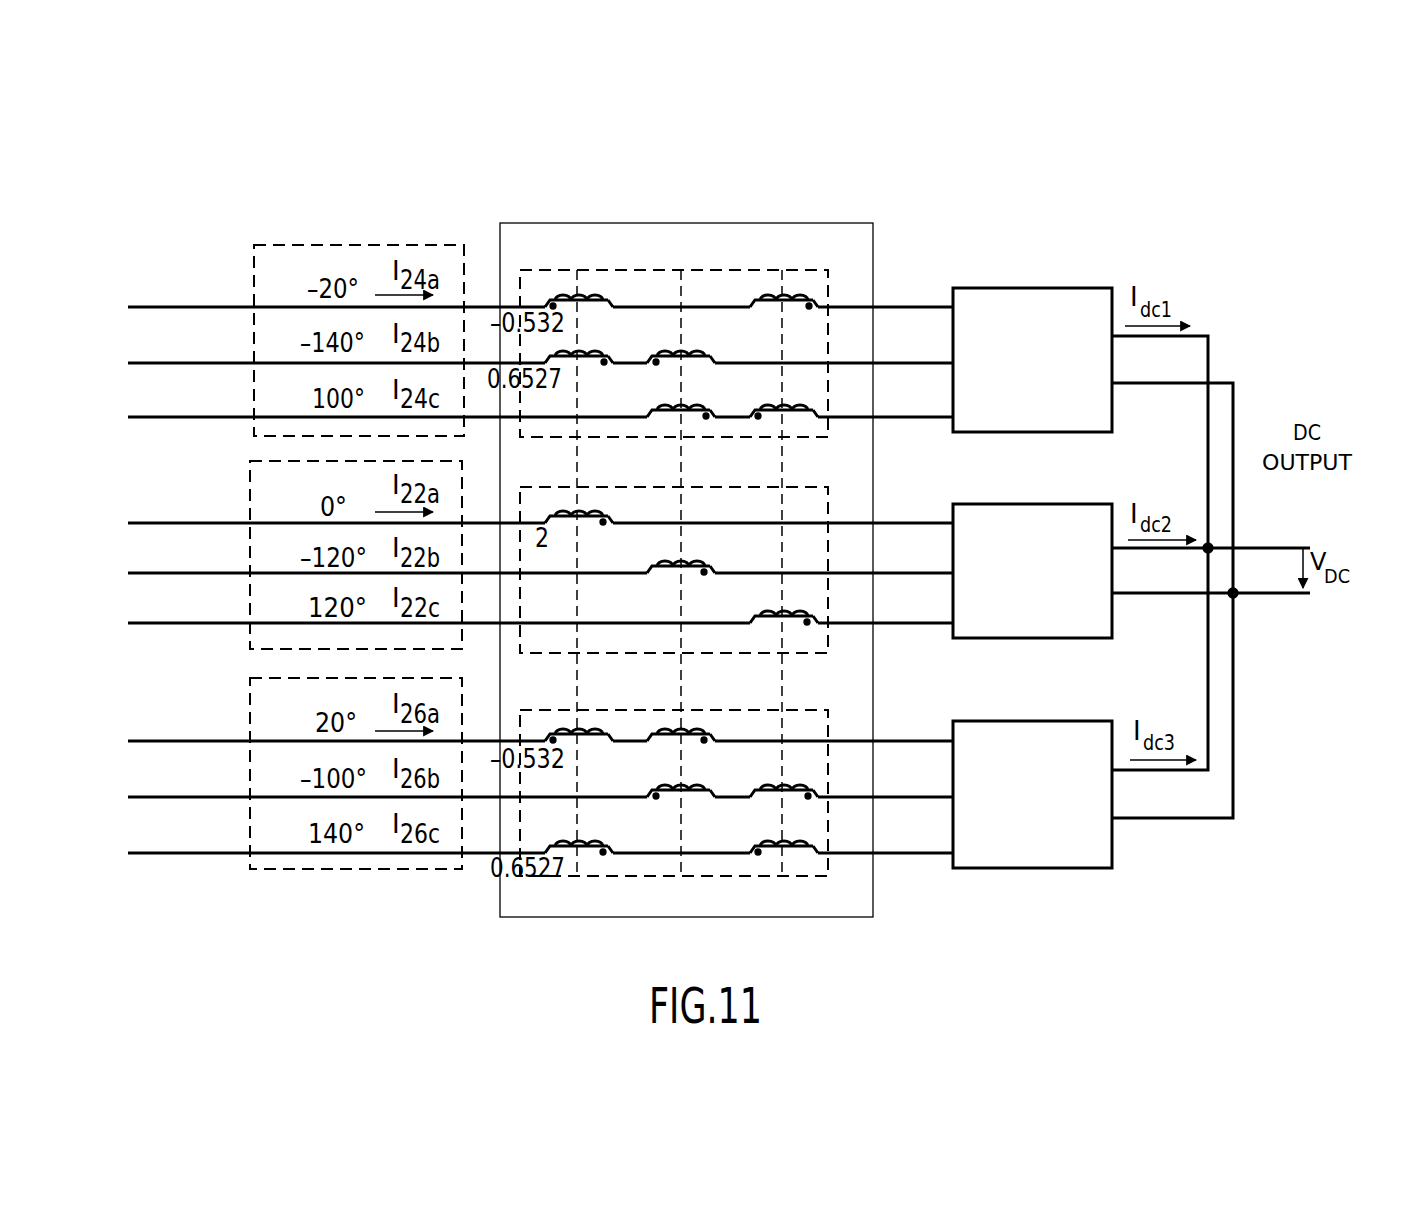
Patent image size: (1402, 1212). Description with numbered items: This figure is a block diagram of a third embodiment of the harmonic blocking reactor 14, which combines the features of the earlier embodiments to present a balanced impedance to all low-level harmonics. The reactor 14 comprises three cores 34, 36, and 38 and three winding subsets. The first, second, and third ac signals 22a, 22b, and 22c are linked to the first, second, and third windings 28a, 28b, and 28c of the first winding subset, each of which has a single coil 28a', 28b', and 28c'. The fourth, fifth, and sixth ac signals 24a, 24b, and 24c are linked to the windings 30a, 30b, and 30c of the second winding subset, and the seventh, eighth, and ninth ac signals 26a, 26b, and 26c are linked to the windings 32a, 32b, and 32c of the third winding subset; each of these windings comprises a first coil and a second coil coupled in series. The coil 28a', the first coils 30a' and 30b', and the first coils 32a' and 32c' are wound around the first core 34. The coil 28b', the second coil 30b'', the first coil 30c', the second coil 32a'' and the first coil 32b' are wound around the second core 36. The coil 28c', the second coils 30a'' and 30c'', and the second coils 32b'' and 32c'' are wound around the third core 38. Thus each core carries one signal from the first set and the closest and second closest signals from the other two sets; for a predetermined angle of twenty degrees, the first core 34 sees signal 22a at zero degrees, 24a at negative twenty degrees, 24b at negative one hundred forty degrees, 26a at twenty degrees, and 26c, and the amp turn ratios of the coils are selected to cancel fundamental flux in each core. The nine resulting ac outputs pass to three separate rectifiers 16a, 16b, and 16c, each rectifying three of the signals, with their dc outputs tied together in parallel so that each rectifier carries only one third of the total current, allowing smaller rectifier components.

The harmonic blocking reactor 14 is at (633, 222).
The rectifier 16a is at (1058, 288).
The rectifier 16b is at (1045, 504).
The rectifier 16c is at (1043, 721).
The first ac signal 22a is at (212, 523).
The second ac signal 22b is at (212, 573).
The third ac signal 22c is at (212, 623).
The fourth ac signal 24a is at (218, 307).
The fifth ac signal 24b is at (218, 363).
The sixth ac signal 24c is at (218, 417).
The seventh ac signal 26a is at (212, 741).
The eighth ac signal 26b is at (212, 797).
The ninth ac signal 26c is at (212, 853).
The first winding 28a is at (898, 496).
The second winding 28b is at (898, 548).
The third winding 28c is at (899, 598).
The first coil 28a' is at (602, 481).
The first coil 28b' is at (707, 549).
The first coil 28c' is at (762, 599).
The first winding 30a is at (929, 280).
The second winding 30b is at (897, 334).
The third winding 30c is at (897, 390).
The first coil 30a' is at (606, 291).
The second coil 30a'' is at (843, 259).
The first coil 30b' is at (602, 341).
The second coil 30b'' is at (706, 341).
The first coil 30c' is at (656, 394).
The second coil 30c'' is at (754, 394).
The first winding 32a is at (898, 716).
The second winding 32b is at (898, 770).
The third winding 32c is at (899, 826).
The first coil 32a' is at (606, 708).
The second coil 32a'' is at (710, 708).
The first coil 32b' is at (706, 771).
The second coil 32b'' is at (803, 731).
The first coil 32c' is at (610, 827).
The second coil 32c'' is at (759, 827).
The first core 34 is at (590, 237).
The second core 36 is at (690, 237).
The third core 38 is at (785, 237).